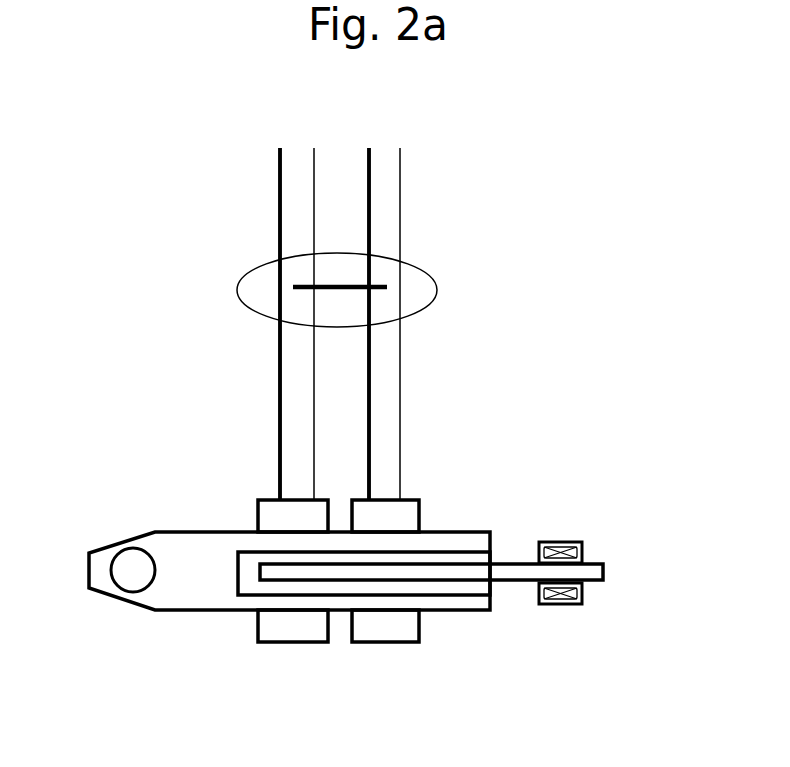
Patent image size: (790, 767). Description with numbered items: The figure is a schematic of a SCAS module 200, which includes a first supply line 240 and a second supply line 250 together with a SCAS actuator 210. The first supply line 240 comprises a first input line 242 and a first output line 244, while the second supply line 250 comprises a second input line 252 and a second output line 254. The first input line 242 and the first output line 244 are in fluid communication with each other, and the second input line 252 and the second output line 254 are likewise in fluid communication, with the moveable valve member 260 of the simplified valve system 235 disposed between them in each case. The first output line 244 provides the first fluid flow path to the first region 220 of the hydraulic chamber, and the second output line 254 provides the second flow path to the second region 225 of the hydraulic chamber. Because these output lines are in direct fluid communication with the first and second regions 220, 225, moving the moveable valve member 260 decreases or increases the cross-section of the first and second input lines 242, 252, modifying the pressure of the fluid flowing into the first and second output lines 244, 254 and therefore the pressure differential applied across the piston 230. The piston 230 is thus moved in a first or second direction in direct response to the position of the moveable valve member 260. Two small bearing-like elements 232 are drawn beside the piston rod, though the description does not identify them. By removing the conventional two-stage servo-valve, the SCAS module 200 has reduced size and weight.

The SCAS module 200 is at (477, 103).
The SCAS actuator 210 is at (565, 442).
The first region of the hydraulic chamber 220 is at (272, 520).
The second region of the hydraulic chamber 225 is at (400, 520).
The piston 230 is at (525, 572).
The rollers 232 is at (582, 602).
The simplified valve system 235 is at (236, 289).
The first supply line 240 is at (242, 180).
The first input line 242 is at (291, 231).
The first output line 244 is at (288, 401).
The second supply line 250 is at (427, 182).
The second input line 252 is at (378, 238).
The second output line 254 is at (387, 392).
The moveable valve member 260 is at (390, 292).